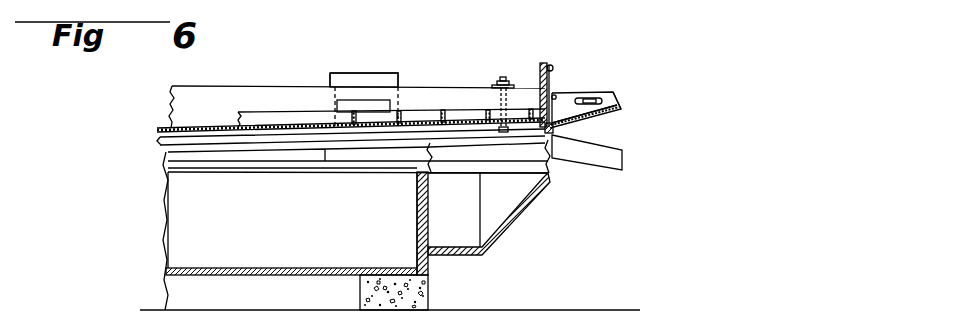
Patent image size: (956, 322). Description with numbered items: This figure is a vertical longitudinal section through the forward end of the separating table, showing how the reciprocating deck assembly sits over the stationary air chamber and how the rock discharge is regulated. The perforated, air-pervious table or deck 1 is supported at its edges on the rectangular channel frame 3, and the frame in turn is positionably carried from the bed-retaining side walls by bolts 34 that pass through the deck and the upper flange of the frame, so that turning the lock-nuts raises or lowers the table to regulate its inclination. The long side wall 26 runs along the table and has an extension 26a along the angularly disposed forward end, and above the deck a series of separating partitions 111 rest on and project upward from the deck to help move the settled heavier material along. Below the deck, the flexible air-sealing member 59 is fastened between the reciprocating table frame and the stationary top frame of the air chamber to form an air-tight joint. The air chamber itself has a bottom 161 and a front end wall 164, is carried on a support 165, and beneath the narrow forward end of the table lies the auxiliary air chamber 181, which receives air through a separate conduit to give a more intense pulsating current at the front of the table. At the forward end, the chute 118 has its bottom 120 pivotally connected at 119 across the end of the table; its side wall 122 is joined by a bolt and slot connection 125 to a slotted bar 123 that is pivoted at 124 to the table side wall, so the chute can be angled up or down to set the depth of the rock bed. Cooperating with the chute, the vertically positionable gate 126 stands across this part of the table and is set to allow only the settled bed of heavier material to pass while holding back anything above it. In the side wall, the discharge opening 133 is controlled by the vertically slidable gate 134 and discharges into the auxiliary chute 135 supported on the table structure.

The table or deck 1 is at (262, 127).
The rectangular frame 3 is at (200, 140).
The bed-retaining wall 26 is at (265, 153).
The extension of wall 26a is at (373, 153).
The bolts 34 is at (507, 98).
The flexible air-sealing member 59 is at (433, 157).
The separating partitions 111 is at (410, 116).
The chute 118 is at (620, 101).
The pivot of chute bottom 119 is at (553, 125).
The bottom of chute 120 is at (610, 112).
The side wall of chute 122 is at (613, 92).
The slotted bars 123 is at (555, 94).
The pivot of slotted bars 124 is at (558, 67).
The bolt and slot connections 125 is at (592, 97).
The vertically positionable gate 126 is at (539, 80).
The discharge opening 133 is at (338, 98).
The vertically slidable gate 134 is at (368, 76).
The chute 135 is at (579, 167).
The bottom of air chamber 161 is at (277, 246).
The front end wall of air chamber 164 is at (417, 221).
The support 165 is at (428, 294).
The auxiliary air chamber 181 is at (497, 207).